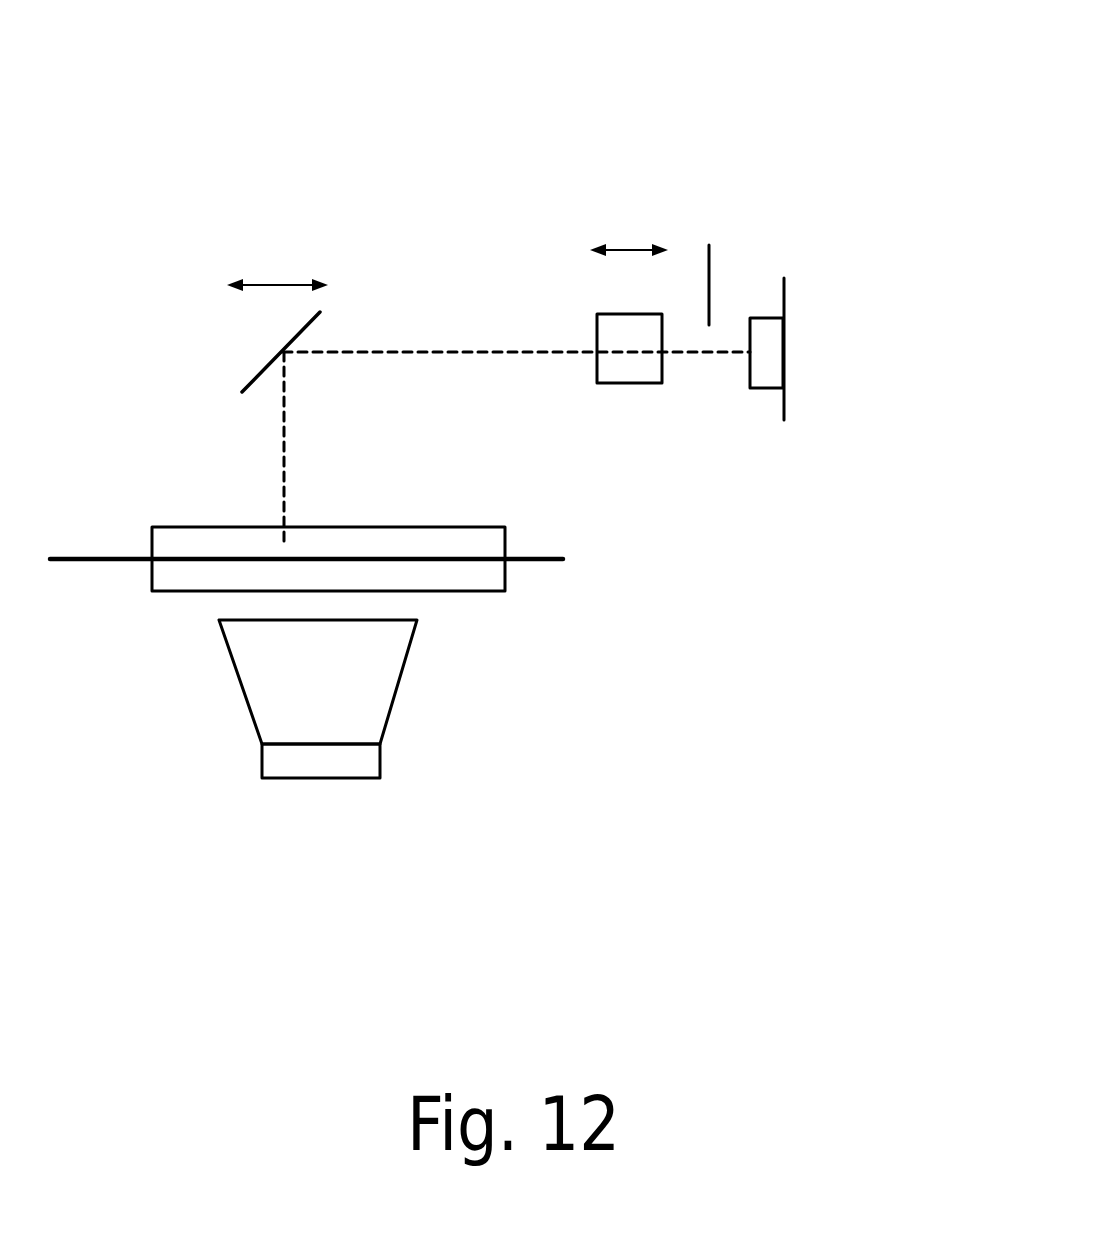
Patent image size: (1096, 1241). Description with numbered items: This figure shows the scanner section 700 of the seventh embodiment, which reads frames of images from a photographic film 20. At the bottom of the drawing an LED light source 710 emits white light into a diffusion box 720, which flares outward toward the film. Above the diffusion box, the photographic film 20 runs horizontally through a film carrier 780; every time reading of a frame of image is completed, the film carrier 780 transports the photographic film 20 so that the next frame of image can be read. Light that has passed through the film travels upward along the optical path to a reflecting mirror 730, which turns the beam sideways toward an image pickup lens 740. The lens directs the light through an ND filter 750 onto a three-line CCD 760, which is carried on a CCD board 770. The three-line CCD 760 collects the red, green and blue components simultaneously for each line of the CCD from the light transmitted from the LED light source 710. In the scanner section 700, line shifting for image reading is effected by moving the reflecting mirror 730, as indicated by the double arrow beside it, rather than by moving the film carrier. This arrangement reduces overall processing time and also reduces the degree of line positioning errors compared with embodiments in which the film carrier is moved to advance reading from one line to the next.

The scanner section 700 is at (797, 120).
The photographic film 20 is at (78, 557).
The film carrier 780 is at (432, 538).
The diffusion box 720 is at (400, 672).
The LED light source 710 is at (380, 760).
The reflecting mirror 730 is at (263, 365).
The image pickup lens 740 is at (597, 325).
The ND filter 750 is at (710, 265).
The 3-line CCD 760 is at (770, 370).
The CCD board 770 is at (784, 307).